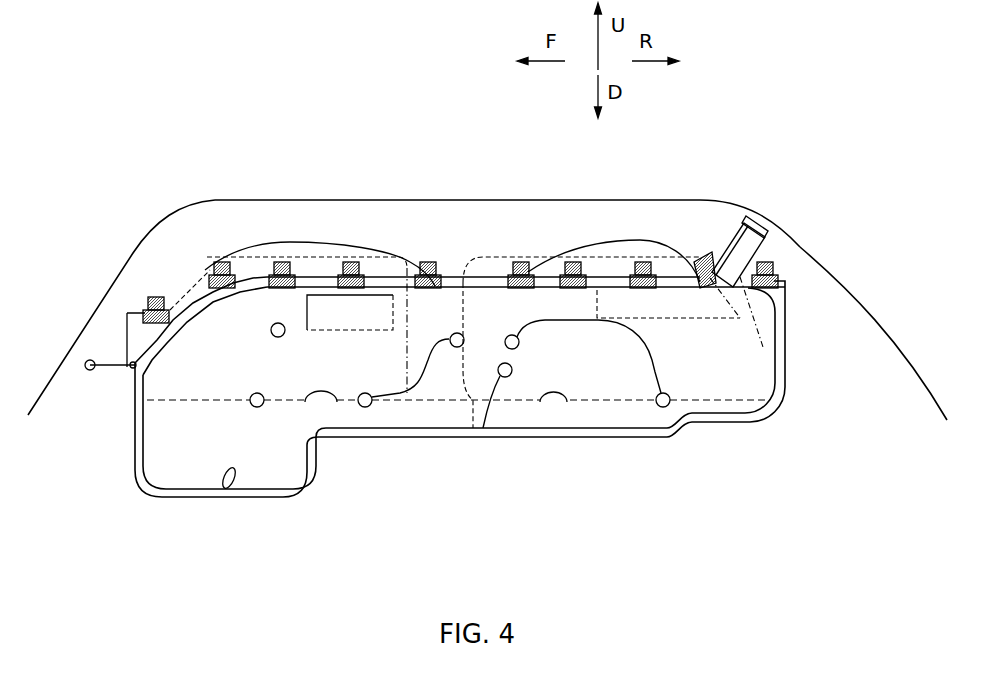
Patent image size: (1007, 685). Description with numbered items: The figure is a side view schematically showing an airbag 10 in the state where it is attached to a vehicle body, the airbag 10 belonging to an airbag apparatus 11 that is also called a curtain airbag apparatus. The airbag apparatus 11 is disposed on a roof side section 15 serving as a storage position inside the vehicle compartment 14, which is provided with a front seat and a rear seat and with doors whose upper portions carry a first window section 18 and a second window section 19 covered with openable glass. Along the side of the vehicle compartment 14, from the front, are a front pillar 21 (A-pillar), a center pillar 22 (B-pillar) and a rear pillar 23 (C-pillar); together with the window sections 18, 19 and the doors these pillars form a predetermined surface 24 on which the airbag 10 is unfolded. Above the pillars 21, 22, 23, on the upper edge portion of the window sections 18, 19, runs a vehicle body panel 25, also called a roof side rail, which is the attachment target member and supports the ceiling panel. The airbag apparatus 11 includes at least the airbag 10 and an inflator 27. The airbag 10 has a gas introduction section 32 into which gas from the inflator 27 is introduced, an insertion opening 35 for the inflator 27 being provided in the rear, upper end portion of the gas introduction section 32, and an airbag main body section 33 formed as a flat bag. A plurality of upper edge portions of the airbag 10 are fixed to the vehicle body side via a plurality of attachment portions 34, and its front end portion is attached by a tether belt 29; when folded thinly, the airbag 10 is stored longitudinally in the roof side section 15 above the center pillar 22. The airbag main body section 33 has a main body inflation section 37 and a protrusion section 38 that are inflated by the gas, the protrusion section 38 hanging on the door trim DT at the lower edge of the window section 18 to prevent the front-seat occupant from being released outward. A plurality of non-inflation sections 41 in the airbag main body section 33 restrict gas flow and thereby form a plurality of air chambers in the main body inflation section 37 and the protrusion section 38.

The airbag 10 is at (508, 230).
The airbag apparatus 11 is at (781, 229).
The vehicle compartment 14 is at (618, 447).
The roof side section 15 is at (443, 218).
The first window section 18 is at (338, 405).
The second window section 19 is at (567, 404).
The front pillar 21 is at (110, 313).
The center pillar 22 is at (473, 428).
The rear pillar 23 is at (827, 284).
The predetermined surface 24 is at (758, 347).
The vehicle body panel 25 is at (392, 200).
The inflator 27 is at (750, 215).
The tether belt 29 is at (110, 370).
The gas introduction section 32 is at (713, 250).
The airbag main body section 33 is at (768, 415).
The attachment portion 34 is at (156, 296).
The insertion opening 35 is at (718, 242).
The main body inflation section 37 is at (434, 440).
The protrusion section 38 is at (257, 497).
The non-inflation section 41 is at (255, 406).
The door trim DT is at (157, 410).